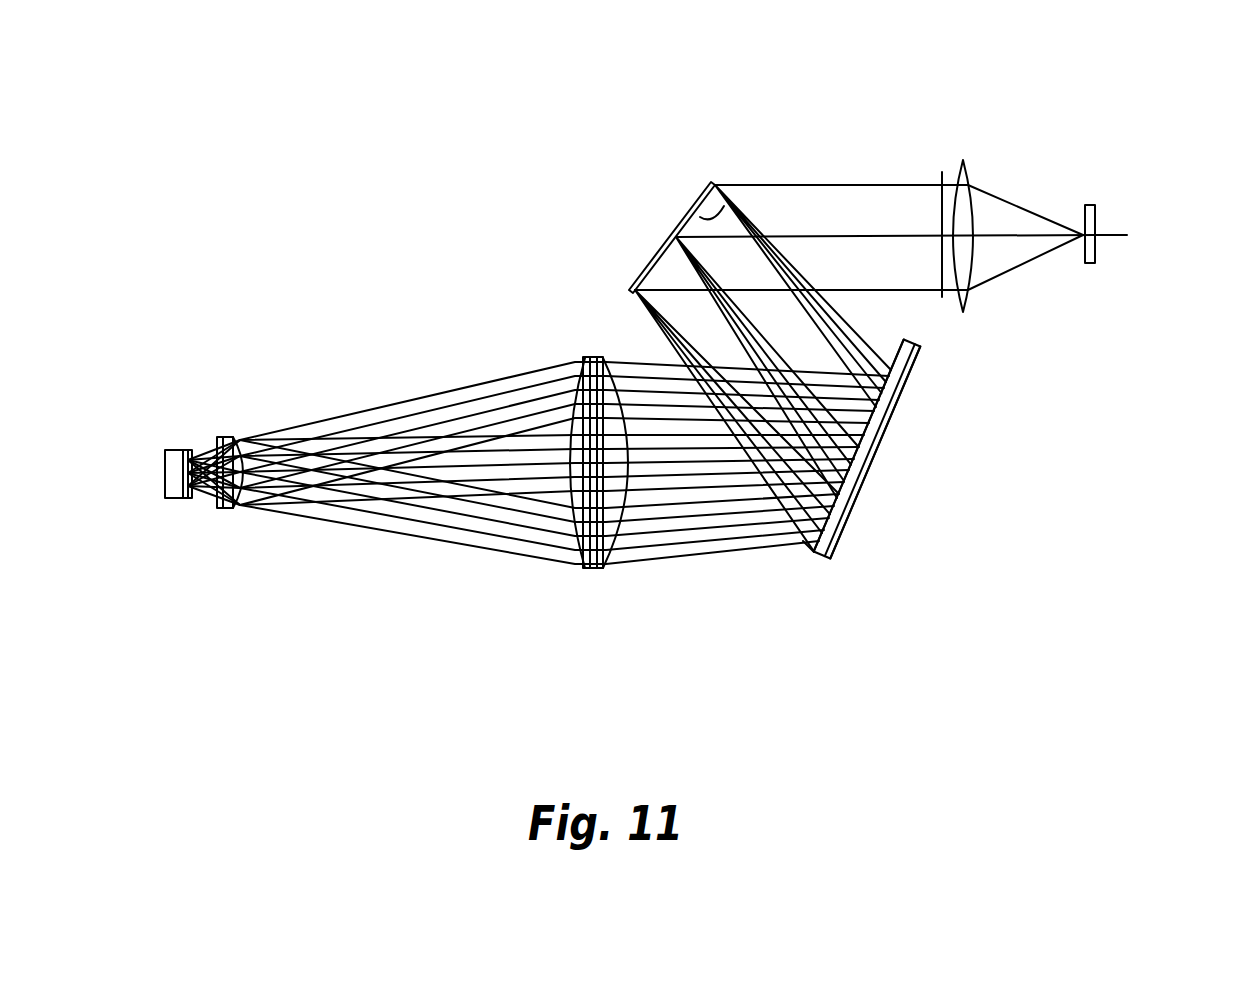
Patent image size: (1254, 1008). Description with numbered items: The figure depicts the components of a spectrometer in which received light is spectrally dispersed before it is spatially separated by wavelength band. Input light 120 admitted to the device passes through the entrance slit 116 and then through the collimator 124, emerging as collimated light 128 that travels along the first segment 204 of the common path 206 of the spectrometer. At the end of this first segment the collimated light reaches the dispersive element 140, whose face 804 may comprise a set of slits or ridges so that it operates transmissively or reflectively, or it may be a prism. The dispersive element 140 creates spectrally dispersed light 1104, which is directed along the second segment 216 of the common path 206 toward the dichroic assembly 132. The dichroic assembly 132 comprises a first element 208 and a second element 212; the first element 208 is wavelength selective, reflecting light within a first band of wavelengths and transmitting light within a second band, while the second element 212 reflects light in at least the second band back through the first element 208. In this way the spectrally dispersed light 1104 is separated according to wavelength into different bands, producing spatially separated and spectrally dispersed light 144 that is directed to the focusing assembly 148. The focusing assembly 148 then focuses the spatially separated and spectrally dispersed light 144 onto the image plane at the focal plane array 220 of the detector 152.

The input light 120 is at (1127, 235).
The entrance slit 116 is at (1090, 204).
The collimator 124 is at (963, 158).
The collimated light 128 is at (856, 184).
The first segment 204 is at (806, 161).
The dispersive element 140 is at (655, 268).
The face of the dispersive element 804 is at (735, 183).
The common path 206 is at (580, 312).
The second segment 216 is at (879, 310).
The spectrally dispersed light 1104 is at (873, 335).
The dichroic assembly 132 is at (897, 497).
The first element 208 is at (813, 552).
The second element 212 is at (840, 555).
The spatially separated and spectrally dispersed light 144 is at (663, 582).
The focusing assembly 148 is at (234, 532).
The detector 152 is at (167, 492).
The focal plane array 220 is at (199, 497).